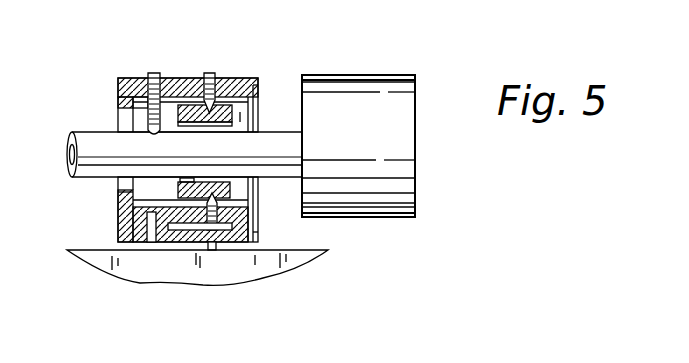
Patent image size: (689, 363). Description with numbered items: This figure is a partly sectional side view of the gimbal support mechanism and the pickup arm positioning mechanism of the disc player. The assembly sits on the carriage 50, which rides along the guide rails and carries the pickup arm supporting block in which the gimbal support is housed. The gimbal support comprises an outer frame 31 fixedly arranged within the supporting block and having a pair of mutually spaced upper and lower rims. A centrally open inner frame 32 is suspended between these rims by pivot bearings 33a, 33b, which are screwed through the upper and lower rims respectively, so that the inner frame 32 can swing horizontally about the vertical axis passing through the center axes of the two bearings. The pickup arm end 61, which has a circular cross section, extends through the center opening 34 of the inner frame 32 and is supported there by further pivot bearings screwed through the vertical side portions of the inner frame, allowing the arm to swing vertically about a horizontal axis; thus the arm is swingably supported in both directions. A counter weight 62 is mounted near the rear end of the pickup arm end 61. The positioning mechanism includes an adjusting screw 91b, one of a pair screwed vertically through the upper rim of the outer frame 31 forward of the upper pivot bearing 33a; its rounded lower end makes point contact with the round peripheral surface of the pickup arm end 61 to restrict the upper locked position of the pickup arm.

The outer frame 31 is at (118, 218).
The inner frame 32 is at (227, 107).
The pivot bearing 33a is at (205, 73).
The pivot bearing 33b is at (207, 250).
The center opening 34 is at (230, 182).
The carriage 50 is at (87, 258).
The pickup arm end 61 is at (106, 146).
The counter weight 62 is at (405, 109).
The adjusting screw 91b is at (148, 76).